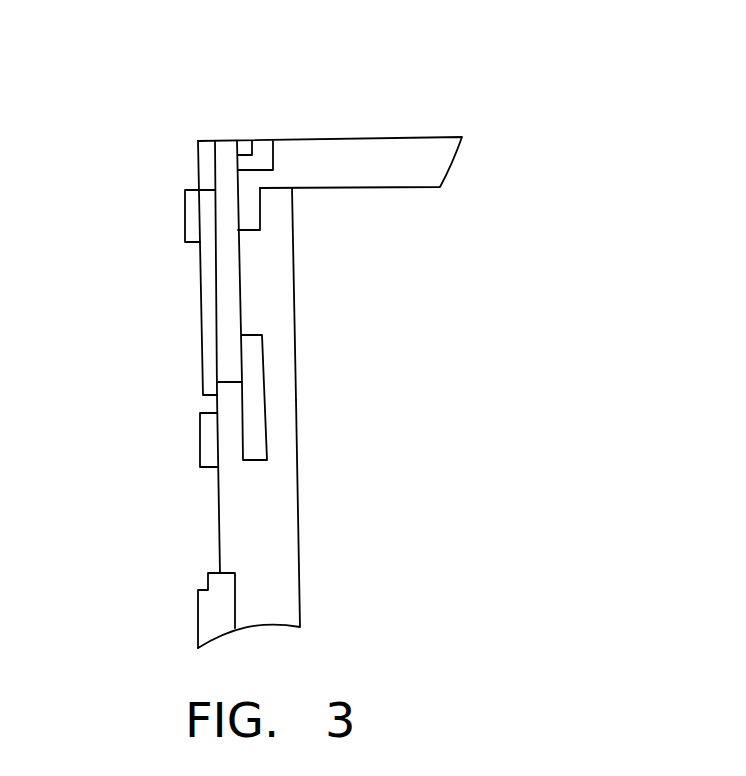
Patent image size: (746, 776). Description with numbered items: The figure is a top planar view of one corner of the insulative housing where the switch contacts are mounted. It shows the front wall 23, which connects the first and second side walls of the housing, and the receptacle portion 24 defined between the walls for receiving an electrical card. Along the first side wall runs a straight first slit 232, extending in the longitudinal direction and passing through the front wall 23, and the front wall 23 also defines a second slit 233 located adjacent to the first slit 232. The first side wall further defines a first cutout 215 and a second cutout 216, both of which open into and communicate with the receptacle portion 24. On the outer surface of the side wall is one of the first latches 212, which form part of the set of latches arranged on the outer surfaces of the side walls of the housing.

The front wall 23 is at (342, 162).
The receptacle portion 24 is at (333, 215).
The first latches 212 is at (193, 218).
The first cutout 215 is at (258, 520).
The second cutout 216 is at (253, 283).
The first slit 232 is at (228, 170).
The second slit 233 is at (265, 155).